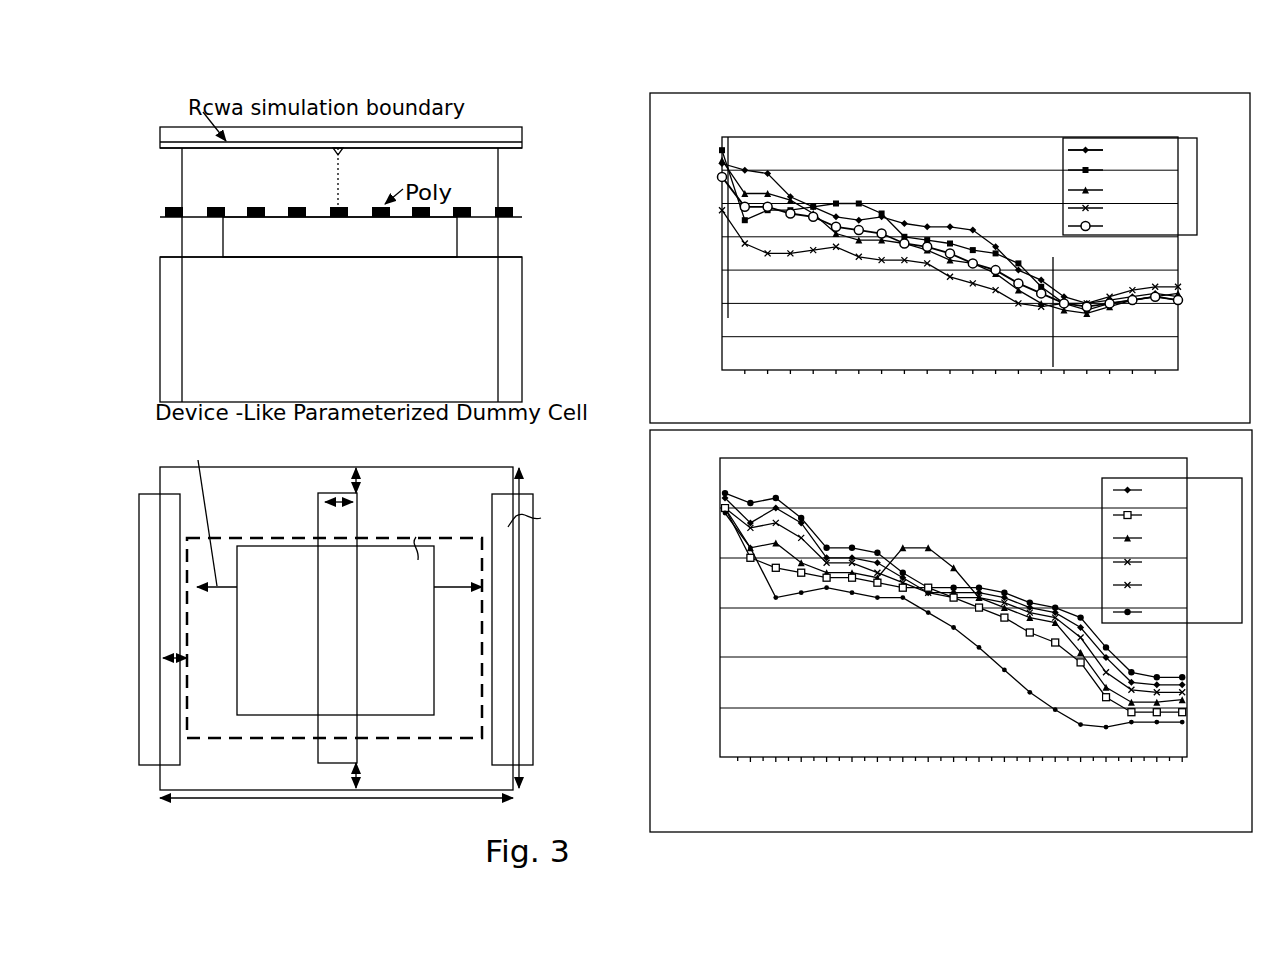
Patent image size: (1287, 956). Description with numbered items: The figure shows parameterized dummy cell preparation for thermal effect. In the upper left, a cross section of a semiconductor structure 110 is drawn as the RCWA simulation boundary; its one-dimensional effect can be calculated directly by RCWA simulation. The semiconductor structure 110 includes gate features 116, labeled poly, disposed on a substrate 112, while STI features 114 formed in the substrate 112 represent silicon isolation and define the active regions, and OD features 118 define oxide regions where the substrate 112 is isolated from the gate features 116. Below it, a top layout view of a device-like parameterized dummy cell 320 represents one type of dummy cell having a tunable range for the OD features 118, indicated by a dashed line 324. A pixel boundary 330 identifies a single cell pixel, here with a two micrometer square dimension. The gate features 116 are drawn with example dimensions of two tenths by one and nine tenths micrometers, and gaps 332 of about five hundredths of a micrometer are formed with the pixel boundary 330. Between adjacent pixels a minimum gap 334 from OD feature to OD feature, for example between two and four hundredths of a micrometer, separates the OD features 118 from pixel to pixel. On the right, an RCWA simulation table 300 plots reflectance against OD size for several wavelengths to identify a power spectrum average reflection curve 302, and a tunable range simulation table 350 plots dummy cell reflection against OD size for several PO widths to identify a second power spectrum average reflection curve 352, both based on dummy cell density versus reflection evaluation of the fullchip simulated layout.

The semiconductor structure 110 is at (149, 179).
The substrate 112 is at (160, 367).
The STI features 114 is at (160, 243).
The gate features (PO) 116 is at (342, 222).
The OD features 118 is at (290, 233).
The RCWA simulation table 300 is at (911, 230).
The power spectrum average reflection curve 302 is at (853, 220).
The device-like parameterized dummy cell 320 is at (318, 631).
The dashed line 324 is at (211, 740).
The pixel boundary 330 is at (156, 482).
The gaps 332 is at (256, 527).
The minimum gap 334 is at (145, 741).
The tunable range simulation table 350 is at (918, 629).
The power spectrum average reflection curve 352 is at (873, 600).